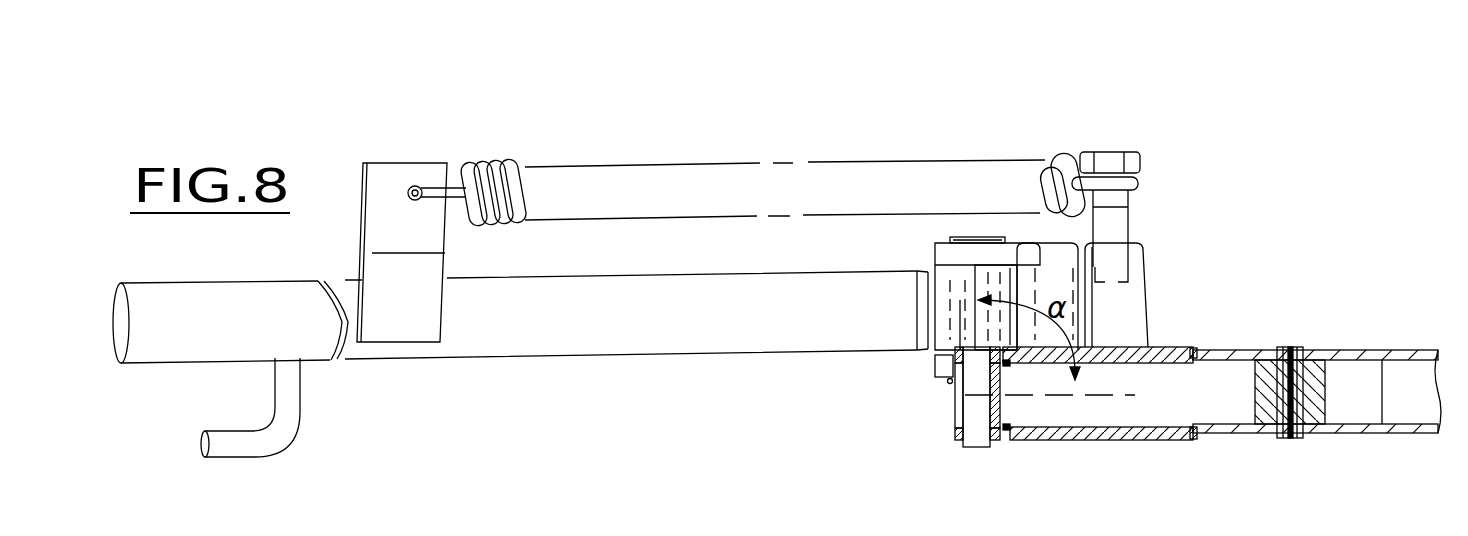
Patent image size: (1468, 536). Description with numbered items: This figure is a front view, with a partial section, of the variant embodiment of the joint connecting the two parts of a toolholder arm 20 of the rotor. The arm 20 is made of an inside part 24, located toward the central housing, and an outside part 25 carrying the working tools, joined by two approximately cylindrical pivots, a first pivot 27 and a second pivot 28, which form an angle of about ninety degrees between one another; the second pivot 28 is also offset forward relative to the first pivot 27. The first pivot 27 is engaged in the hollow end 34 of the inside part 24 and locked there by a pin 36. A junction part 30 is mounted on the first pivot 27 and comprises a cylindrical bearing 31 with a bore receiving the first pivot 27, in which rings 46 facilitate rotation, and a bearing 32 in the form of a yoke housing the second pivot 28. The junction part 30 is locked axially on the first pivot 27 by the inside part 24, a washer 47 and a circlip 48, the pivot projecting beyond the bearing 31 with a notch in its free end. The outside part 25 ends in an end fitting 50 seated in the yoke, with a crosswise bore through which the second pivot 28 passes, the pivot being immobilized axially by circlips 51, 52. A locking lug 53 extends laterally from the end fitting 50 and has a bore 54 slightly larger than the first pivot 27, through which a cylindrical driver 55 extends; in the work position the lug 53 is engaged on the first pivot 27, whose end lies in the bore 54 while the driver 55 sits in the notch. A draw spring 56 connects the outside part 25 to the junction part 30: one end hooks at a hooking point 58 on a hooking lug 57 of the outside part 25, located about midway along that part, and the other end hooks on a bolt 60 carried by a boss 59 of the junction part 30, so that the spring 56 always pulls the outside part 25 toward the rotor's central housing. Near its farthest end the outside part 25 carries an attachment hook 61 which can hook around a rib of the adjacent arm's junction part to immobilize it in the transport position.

The toolholder arm 20 is at (1362, 350).
The inside part 24 is at (1365, 432).
The outside part 25 is at (502, 340).
The first pivot 27 is at (1215, 380).
The second pivot 28 is at (973, 238).
The junction part 30 is at (1100, 333).
The cylindrical bearing 31 is at (1180, 440).
The bearing in the form of a yoke 32 is at (935, 256).
The hollow end 34 is at (1413, 380).
The pin 36 is at (1290, 440).
The rings 46 is at (1127, 440).
The washer 47 is at (1010, 440).
The circlip 48 is at (1000, 443).
The end fitting 50 is at (965, 328).
The circlip 51 is at (942, 243).
The circlip 52 is at (950, 380).
The locking lug 53 is at (963, 440).
The bore 54 is at (955, 425).
The driver 55 is at (958, 403).
The draw spring 56 is at (492, 163).
The hooking lug 57 is at (373, 187).
The hooking point 58 is at (412, 188).
The boss 59 is at (1137, 265).
The bolt 60 is at (1117, 217).
The attachment hook 61 is at (273, 427).